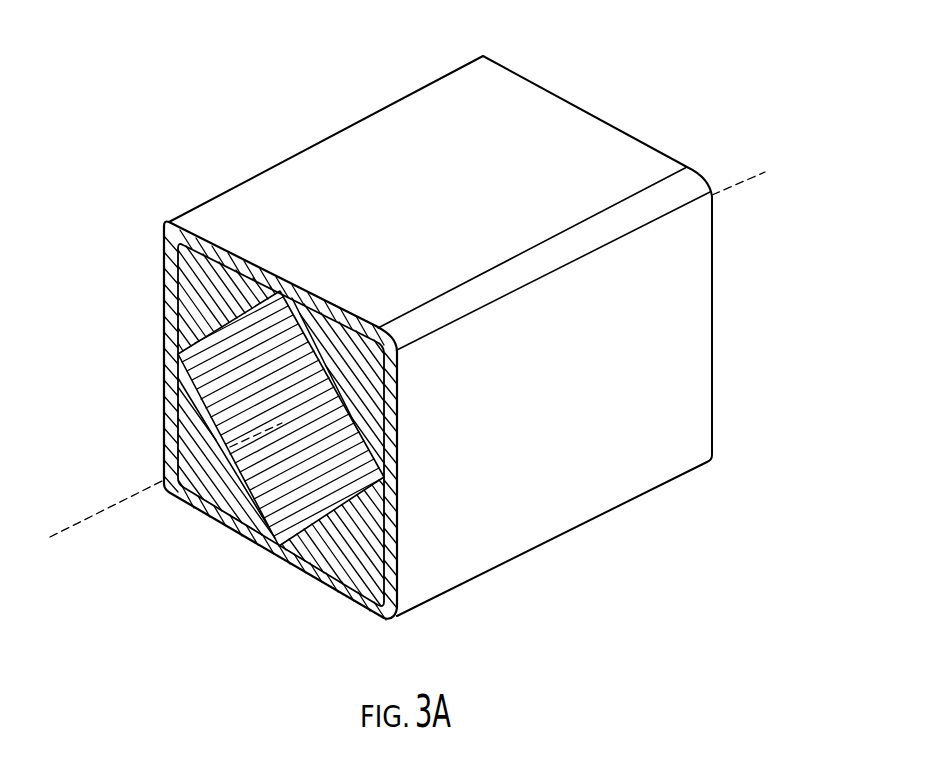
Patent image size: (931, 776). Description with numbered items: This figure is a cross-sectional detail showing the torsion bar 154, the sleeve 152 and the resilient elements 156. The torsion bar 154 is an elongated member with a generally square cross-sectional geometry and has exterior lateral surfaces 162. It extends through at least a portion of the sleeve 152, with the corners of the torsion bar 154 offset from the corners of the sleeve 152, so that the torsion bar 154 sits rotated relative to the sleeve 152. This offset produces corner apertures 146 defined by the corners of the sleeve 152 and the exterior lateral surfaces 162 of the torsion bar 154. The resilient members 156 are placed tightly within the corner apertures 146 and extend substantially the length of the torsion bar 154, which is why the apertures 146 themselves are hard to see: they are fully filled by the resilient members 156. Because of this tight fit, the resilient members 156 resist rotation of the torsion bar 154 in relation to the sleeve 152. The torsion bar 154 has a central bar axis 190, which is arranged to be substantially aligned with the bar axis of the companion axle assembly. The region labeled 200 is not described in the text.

The corner aperture 146 is at (163, 252).
The sleeve 152 is at (450, 123).
The torsion bar 154 is at (252, 378).
The resilient element 156 is at (357, 343).
The exterior lateral surface 162 is at (213, 442).
The central bar axis 190 is at (737, 177).
The side surface 200 is at (548, 413).